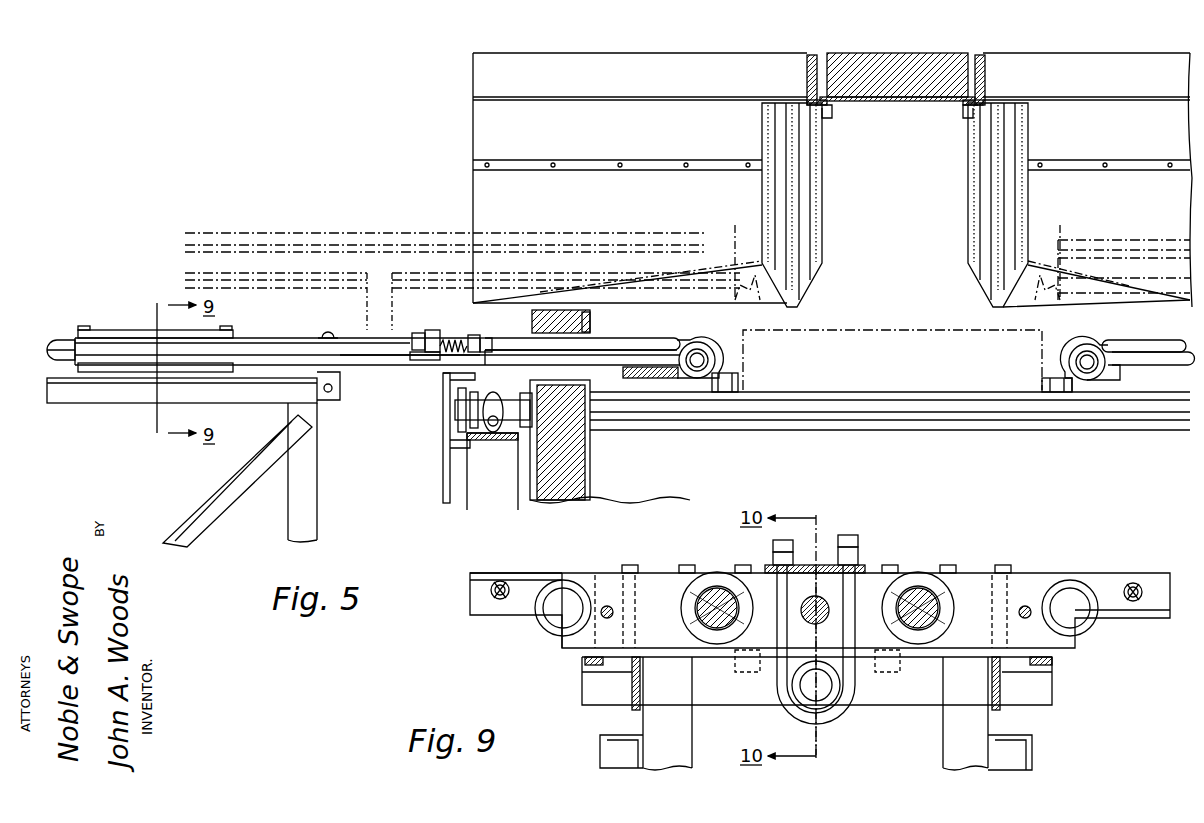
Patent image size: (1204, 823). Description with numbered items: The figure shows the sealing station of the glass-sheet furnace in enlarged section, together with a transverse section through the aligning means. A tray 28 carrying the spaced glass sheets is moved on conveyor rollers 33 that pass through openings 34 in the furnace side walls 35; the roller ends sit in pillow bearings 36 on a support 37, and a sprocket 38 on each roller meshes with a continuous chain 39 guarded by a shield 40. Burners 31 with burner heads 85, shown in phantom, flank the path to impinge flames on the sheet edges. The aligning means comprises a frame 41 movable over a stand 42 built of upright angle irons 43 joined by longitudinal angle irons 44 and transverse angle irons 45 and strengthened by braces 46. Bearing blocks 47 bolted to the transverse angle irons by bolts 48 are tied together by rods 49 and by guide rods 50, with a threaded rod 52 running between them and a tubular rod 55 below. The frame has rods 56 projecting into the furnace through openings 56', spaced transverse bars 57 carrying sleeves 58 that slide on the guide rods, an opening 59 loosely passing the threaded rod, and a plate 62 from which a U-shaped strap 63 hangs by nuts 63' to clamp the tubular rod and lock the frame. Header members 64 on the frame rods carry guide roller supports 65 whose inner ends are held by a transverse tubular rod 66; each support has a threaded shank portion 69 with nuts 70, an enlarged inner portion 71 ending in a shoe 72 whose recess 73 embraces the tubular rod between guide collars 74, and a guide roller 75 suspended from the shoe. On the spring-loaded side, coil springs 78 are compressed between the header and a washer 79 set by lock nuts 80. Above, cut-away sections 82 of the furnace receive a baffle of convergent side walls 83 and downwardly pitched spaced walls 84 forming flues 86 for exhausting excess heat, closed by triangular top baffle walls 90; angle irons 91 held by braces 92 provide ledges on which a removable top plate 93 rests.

In FIG. 5, the tray 28 is at (845, 330).
In FIG. 5, the burners 31 is at (420, 238).
In FIG. 5, the cylindrical rollers 33 is at (905, 412).
In FIG. 5, the openings 34 is at (592, 447).
In FIG. 5, the side walls 35 is at (565, 455).
In FIG. 5, the pillow bearings 36 is at (510, 388).
In FIG. 5, the support 37 is at (490, 445).
In FIG. 5, the sprocket 38 is at (455, 404).
In FIG. 5, the continuous chain 39 is at (450, 443).
In FIG. 5, the shield 40 is at (445, 425).
In FIG. 5, the frame 41 is at (290, 337).
In FIG. 5, the stand 42 is at (306, 488).
In FIG. 5, the upright angle irons 43 is at (302, 453).
In FIG. 9, the upright angle irons 43 is at (668, 733).
In FIG. 5, the longitudinal angle irons 44 is at (108, 392).
In FIG. 9, the longitudinal angle irons 44 is at (635, 675).
In FIG. 5, the transverse angle irons 45 is at (325, 398).
In FIG. 9, the transverse angle irons 45 is at (872, 700).
In FIG. 5, the braces 46 is at (230, 495).
In FIG. 9, the braces 46 is at (618, 750).
In FIG. 5, the bearing blocks 47 is at (330, 330).
In FIG. 9, the bearing blocks 47 is at (600, 575).
In FIG. 5, the bolts 48 is at (333, 390).
In FIG. 9, the bolts 48 is at (672, 572).
In FIG. 9, the rods 49 is at (600, 618).
In FIG. 5, the guide rods 50 is at (65, 345).
In FIG. 9, the guide rods 50 is at (713, 598).
In FIG. 9, the threaded rod 52 is at (820, 596).
In FIG. 9, the tubular rod 55 is at (800, 703).
In FIG. 5, the rods 56 is at (767, 383).
In FIG. 9, the rods 56 is at (806, 618).
In FIG. 5, the openings 56' is at (615, 270).
In FIG. 5, the transverse bars 57 is at (85, 331).
In FIG. 9, the transverse bars 57 is at (573, 578).
In FIG. 9, the sleeves 58 is at (690, 616).
In FIG. 9, the opening 59 is at (828, 612).
In FIG. 9, the plate 62 is at (775, 560).
In FIG. 9, the U-shaped strap 63 is at (869, 557).
In FIG. 9, the nuts 63' is at (869, 531).
In FIG. 5, the header members 64 is at (432, 330).
In FIG. 9, the header members 64 is at (488, 575).
In FIG. 5, the guide roller supports 65 is at (625, 342).
In FIG. 5, the tubular rod 66 is at (700, 380).
In FIG. 5, the threaded shank portion 69 is at (452, 340).
In FIG. 9, the threaded shank portion 69 is at (491, 590).
In FIG. 5, the nuts 70 is at (418, 337).
In FIG. 9, the nuts 70 is at (505, 585).
In FIG. 5, the enlarged inner portion 71 is at (597, 347).
In FIG. 5, the shoe 72 is at (688, 348).
In FIG. 5, the recess 73 is at (680, 372).
In FIG. 5, the guide collars 74 is at (708, 350).
In FIG. 5, the guide rollers 75 is at (740, 382).
In FIG. 5, the coil springs 78 is at (475, 337).
In FIG. 5, the washer 79 is at (495, 345).
In FIG. 5, the lock nuts 80 is at (470, 352).
In FIG. 5, the cut-away sections 82 is at (562, 310).
In FIG. 5, the convergent side walls 83 is at (520, 183).
In FIG. 5, the spaced walls 84 is at (800, 188).
In FIG. 5, the burner heads 85 is at (750, 290).
In FIG. 5, the flues 86 is at (805, 222).
In FIG. 5, the top baffle walls 90 is at (525, 128).
In FIG. 5, the angle irons 91 is at (814, 62).
In FIG. 5, the braces 92 is at (832, 112).
In FIG. 5, the top plate 93 is at (905, 70).